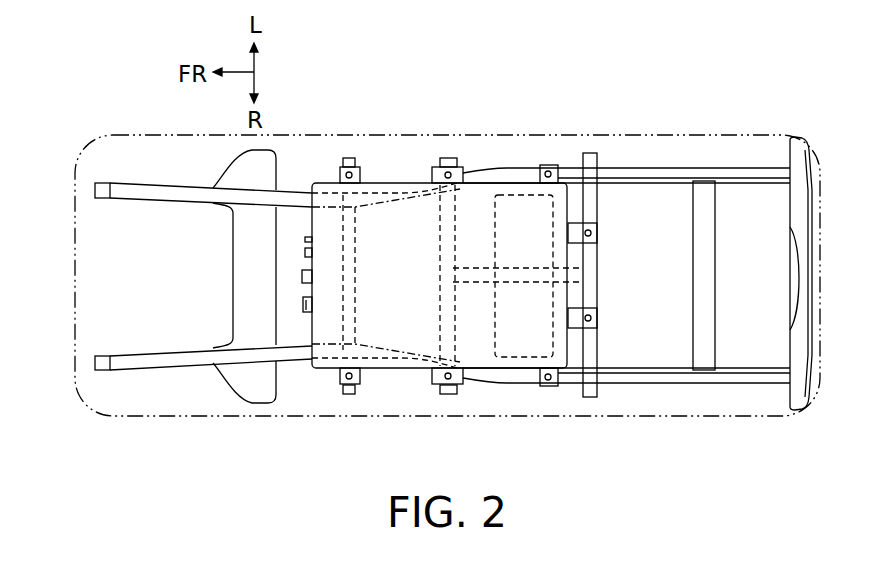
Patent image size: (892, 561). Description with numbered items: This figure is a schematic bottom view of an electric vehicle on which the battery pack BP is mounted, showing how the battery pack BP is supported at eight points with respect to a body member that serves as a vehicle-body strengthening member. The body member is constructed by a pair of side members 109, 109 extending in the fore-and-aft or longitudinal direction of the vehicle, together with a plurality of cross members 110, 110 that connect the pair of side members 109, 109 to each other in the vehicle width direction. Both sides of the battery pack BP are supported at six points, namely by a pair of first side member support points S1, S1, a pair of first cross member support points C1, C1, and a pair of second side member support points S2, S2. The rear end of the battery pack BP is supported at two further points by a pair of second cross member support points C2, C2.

The cross member 110 is at (234, 276).
The side member 109 is at (631, 167).
The battery pack BP is at (382, 183).
The first side member support point S1 is at (346, 174).
The first cross member support point C1 is at (445, 174).
The second side member support point S2 is at (548, 168).
The second cross member support point C2 is at (595, 233).